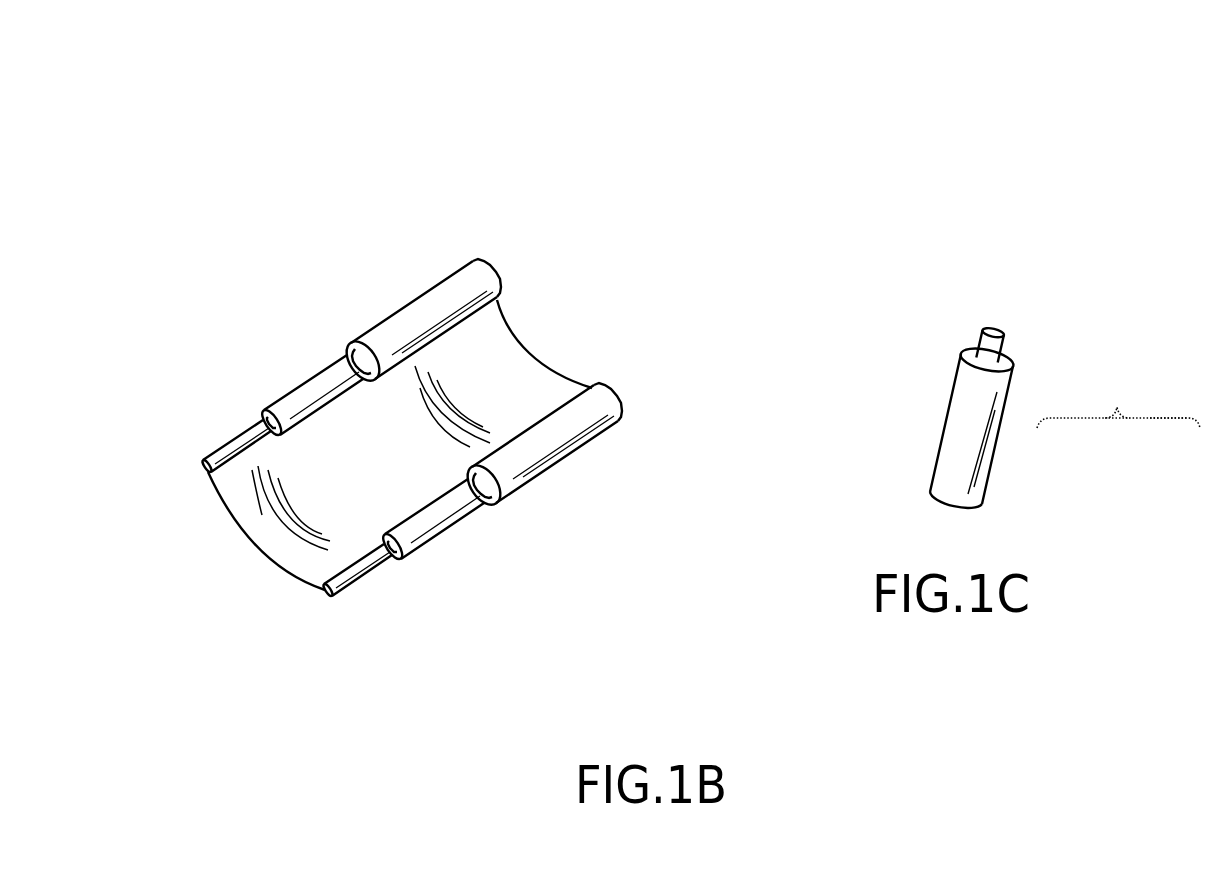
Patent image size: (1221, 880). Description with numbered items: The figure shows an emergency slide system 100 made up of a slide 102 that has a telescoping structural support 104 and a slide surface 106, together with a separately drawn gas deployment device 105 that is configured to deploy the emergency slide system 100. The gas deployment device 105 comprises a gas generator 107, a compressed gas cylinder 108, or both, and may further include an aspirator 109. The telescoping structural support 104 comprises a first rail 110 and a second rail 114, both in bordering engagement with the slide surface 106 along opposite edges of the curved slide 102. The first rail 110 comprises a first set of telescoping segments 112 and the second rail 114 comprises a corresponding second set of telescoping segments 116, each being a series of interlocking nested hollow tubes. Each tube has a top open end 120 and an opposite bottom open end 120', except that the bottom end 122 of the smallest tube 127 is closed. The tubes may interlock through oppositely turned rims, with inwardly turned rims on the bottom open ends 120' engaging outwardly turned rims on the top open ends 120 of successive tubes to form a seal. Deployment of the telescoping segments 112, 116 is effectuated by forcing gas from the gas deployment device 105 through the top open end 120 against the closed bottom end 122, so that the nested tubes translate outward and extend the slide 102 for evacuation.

In FIG. 1B, the emergency slide system 100 is at (724, 196).
In FIG. 1B, the slide 102 is at (578, 204).
In FIG. 1B, the telescoping structural support 104 is at (512, 287).
In FIG. 1C, the gas deployment device 105 is at (990, 388).
In FIG. 1B, the slide surface 106 is at (403, 459).
In FIG. 1C, the gas generator 107 is at (1118, 435).
In FIG. 1C, the compressed gas cylinder 108 is at (1126, 440).
In FIG. 1C, the aspirator 109 is at (1167, 440).
In FIG. 1B, the first rail 110 is at (643, 408).
In FIG. 1B, the first set of telescoping segments 112 is at (597, 407).
In FIG. 1B, the second rail 114 is at (500, 274).
In FIG. 1B, the second set of telescoping segments 116 is at (237, 448).
In FIG. 1B, the top open end 120 is at (456, 430).
In FIG. 1B, the bottom open end 120' is at (408, 426).
In FIG. 1B, the bottom end 122 is at (200, 470).
In FIG. 1B, the smallest tube 127 is at (224, 464).